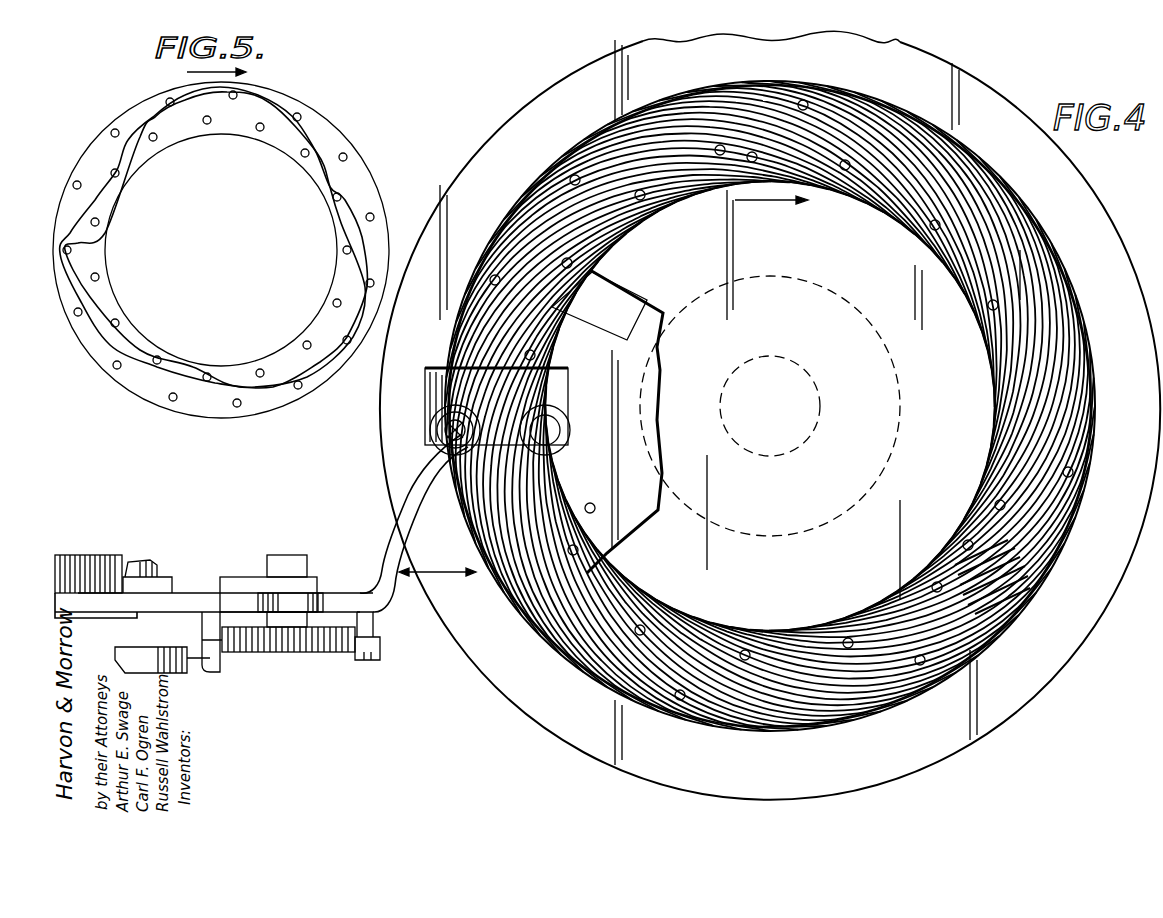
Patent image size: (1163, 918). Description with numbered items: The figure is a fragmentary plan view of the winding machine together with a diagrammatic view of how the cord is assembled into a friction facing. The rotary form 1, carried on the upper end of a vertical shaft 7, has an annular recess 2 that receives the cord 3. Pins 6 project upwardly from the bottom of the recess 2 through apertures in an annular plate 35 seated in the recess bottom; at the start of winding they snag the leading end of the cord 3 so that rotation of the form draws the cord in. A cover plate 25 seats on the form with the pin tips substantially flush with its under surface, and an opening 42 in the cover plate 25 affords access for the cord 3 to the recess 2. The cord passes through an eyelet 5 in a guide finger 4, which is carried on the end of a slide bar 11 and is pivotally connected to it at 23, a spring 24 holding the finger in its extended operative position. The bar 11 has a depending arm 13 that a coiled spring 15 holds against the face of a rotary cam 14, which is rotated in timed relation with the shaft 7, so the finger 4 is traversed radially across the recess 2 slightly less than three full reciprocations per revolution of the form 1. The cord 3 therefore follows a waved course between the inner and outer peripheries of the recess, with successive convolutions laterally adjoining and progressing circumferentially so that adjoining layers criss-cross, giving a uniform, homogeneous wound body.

In FIG. 4, the rotary form 1 is at (600, 747).
In FIG. 4, the annular recess 2 is at (663, 713).
In FIG. 5, the cord 3 is at (312, 140).
In FIG. 4, the cord 3 is at (647, 137).
In FIG. 4, the guide finger 4 is at (403, 557).
In FIG. 4, the eyelet 5 is at (432, 430).
In FIG. 5, the pins 6 is at (170, 103).
In FIG. 4, the pins 6 is at (805, 103).
In FIG. 4, the vertical shaft 7 is at (820, 420).
In FIG. 4, the slide bar 11 is at (243, 583).
In FIG. 4, the depending arm 13 is at (143, 563).
In FIG. 4, the rotary cam 14 is at (74, 560).
In FIG. 4, the coiled spring 15 is at (150, 657).
In FIG. 4, the pivotal connection 23 is at (285, 558).
In FIG. 4, the spring 24 is at (307, 642).
In FIG. 4, the cover plate 25 is at (483, 630).
In FIG. 5, the annular plate 35 is at (100, 237).
In FIG. 4, the opening 42 is at (540, 373).